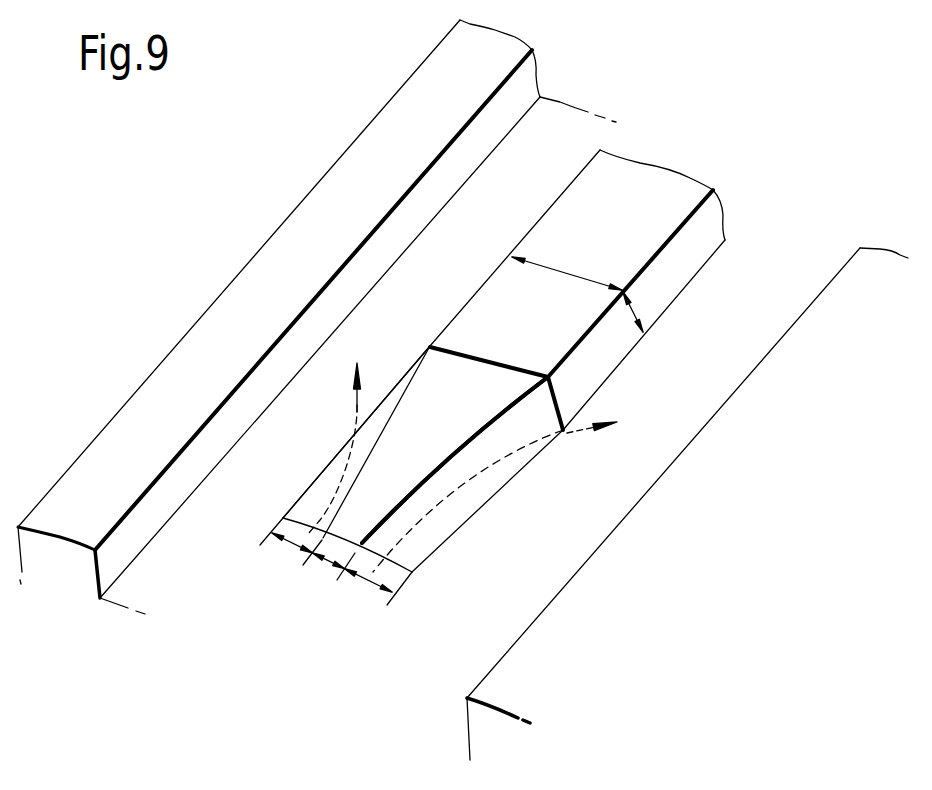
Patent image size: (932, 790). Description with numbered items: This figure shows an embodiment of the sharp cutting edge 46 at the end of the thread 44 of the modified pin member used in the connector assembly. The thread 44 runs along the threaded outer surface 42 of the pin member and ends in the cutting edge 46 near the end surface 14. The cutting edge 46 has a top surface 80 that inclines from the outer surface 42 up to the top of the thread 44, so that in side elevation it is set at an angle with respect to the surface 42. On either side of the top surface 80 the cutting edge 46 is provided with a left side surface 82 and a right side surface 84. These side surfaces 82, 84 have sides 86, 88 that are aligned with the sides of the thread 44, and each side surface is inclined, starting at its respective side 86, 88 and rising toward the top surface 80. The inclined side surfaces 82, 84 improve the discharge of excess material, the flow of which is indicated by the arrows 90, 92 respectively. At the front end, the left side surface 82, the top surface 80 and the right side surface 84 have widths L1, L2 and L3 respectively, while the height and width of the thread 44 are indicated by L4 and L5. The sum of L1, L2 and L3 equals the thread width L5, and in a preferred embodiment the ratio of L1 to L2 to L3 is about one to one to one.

The end surface 14 is at (587, 563).
The threaded outer surface 42 is at (243, 608).
The thread 44 is at (295, 250).
The sharp cutting edge 46 is at (381, 382).
The top surface 80 is at (449, 426).
The left side surface 82 is at (322, 500).
The right side surface 84 is at (468, 499).
The side 86 is at (293, 504).
The side 88 is at (450, 532).
The arrow 90 is at (356, 417).
The arrow 92 is at (570, 436).
The width of left side surface L1 is at (291, 547).
The width of top surface L2 is at (331, 575).
The width of right side surface L3 is at (378, 592).
The height of thread L4 is at (635, 314).
The width of thread L5 is at (567, 265).